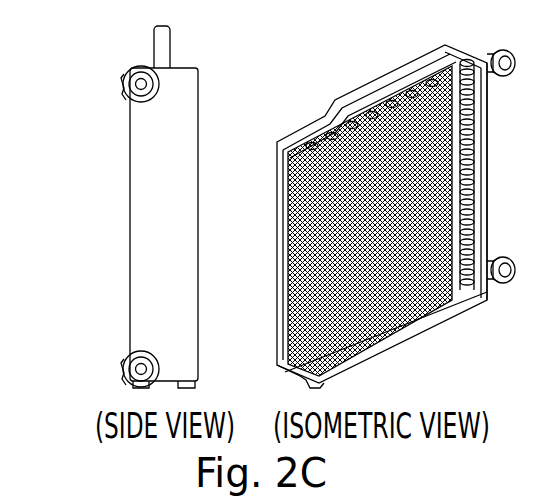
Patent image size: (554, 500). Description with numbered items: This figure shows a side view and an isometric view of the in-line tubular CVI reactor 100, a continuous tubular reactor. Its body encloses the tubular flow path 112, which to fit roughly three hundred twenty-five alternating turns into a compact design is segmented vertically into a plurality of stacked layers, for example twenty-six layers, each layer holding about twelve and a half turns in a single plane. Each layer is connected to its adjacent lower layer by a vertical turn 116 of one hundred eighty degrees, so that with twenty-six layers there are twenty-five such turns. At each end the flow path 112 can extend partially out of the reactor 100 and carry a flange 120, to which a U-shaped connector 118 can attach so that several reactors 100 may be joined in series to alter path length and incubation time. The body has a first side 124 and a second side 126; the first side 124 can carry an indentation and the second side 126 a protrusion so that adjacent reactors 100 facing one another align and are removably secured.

The in-line tubular CVI reactor 100 is at (327, 78).
The tubular flow path 112 is at (470, 60).
The 180° vertical turn 116 is at (488, 108).
The flanged connector 118 is at (553, 183).
The flange 120 is at (520, 244).
The first side 124 is at (198, 118).
The second side 126 is at (130, 190).